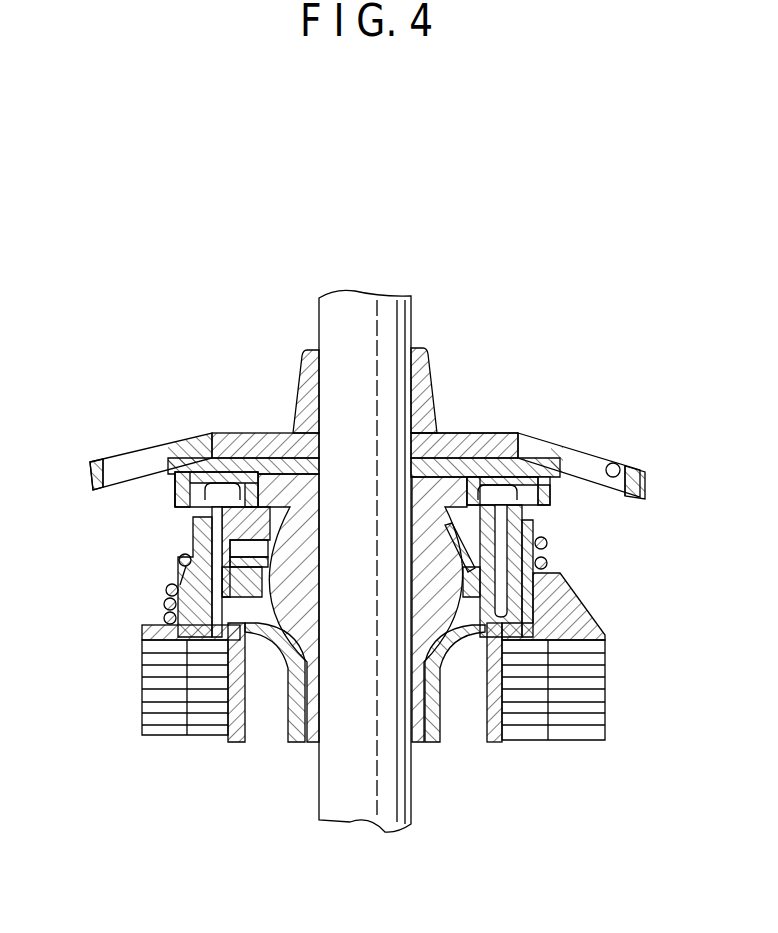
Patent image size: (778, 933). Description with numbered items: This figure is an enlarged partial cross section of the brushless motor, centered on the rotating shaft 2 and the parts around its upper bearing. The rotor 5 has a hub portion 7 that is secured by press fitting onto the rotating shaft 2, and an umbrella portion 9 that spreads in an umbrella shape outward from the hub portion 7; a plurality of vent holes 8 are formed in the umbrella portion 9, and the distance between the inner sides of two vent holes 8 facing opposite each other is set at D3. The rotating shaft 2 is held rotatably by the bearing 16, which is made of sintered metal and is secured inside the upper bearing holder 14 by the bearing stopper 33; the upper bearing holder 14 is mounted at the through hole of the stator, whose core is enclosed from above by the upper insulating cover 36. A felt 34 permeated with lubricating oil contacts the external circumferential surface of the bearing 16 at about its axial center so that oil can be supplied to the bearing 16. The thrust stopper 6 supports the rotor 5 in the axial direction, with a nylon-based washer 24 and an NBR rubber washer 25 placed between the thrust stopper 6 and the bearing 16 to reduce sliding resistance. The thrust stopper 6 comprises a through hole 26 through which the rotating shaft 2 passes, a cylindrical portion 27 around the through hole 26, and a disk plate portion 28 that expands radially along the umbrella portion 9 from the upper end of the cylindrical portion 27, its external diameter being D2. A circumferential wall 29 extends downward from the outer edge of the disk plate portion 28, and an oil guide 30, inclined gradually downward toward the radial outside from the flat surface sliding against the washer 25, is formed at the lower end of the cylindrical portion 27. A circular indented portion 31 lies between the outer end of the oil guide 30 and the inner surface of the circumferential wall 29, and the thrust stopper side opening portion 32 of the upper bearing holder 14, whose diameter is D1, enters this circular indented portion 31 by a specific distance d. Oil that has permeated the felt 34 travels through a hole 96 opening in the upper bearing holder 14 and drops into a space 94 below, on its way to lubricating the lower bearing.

The rotating shaft 2 is at (343, 778).
The rotor 5 is at (578, 358).
The thrust stopper 6 is at (440, 465).
The hub portion 7 is at (305, 372).
The vent holes 8 is at (615, 468).
The umbrella portion 9 is at (640, 480).
The upper bearing holder 14 is at (572, 620).
The bearing 16 is at (432, 603).
The nylon-based washer 24 is at (535, 452).
The washer 25 is at (522, 432).
The through hole 26 is at (428, 400).
The cylindrical portion 27 is at (275, 462).
The disk plate portion 28 is at (230, 465).
The circumferential wall 29 is at (540, 498).
The oil guide 30 is at (165, 545).
The circular indented portion 31 is at (170, 462).
The thrust stopper side opening portion 32 is at (205, 510).
The bearing stopper 33 is at (185, 578).
The felt 34 is at (228, 580).
The upper insulating cover 36 is at (142, 620).
The space 94 is at (560, 700).
The hole 96 is at (500, 650).
The diameter of the upper opening end D1 is at (519, 433).
The external diameter of the disk plate portion D2 is at (551, 447).
The distance between the inner sides of the vent holes D3 is at (563, 447).
The specific distance d is at (170, 507).